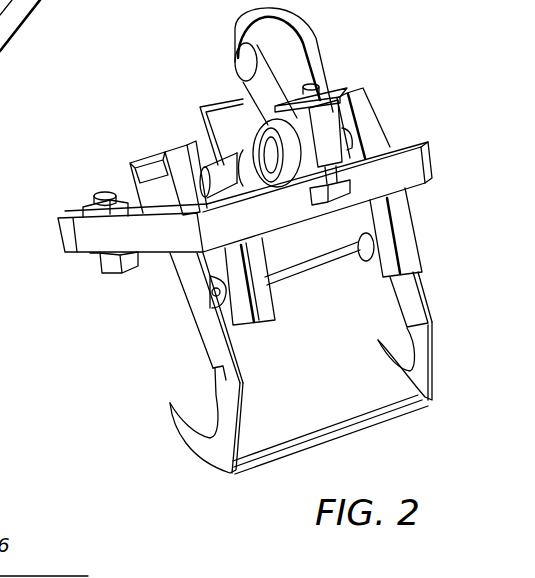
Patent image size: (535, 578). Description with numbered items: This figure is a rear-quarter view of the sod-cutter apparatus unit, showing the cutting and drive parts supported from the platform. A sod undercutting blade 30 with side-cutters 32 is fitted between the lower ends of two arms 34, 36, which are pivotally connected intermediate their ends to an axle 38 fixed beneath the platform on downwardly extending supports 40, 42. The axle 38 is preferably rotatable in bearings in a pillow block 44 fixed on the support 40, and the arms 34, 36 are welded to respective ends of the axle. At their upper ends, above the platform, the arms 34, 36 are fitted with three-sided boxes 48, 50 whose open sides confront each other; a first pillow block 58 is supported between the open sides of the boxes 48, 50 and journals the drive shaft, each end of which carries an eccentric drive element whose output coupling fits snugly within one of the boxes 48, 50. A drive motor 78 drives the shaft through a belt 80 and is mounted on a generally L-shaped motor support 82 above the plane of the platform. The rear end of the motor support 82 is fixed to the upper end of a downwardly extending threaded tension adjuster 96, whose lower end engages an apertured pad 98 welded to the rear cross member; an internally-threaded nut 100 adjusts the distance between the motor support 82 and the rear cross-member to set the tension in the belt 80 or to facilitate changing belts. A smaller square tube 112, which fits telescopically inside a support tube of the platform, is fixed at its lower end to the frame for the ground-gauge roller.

The sod undercutting blade 30 is at (343, 427).
The side-cutters 32 is at (203, 452).
The arm 34 is at (207, 352).
The arm 36 is at (430, 310).
The axle 38 is at (335, 262).
The support 40 is at (260, 318).
The support 42 is at (410, 242).
The pillow block 44 is at (209, 274).
The three-sided box 48 is at (178, 143).
The three-sided box 50 is at (363, 98).
The first pillow block 58 is at (243, 157).
The drive motor 78 is at (247, 33).
The belt 80 is at (270, 83).
The motor support 82 is at (230, 93).
The threaded tension adjuster 96 is at (340, 173).
The apertured pad 98 is at (347, 200).
The internally-threaded nut 100 is at (328, 123).
The smaller square tube 112 is at (93, 257).